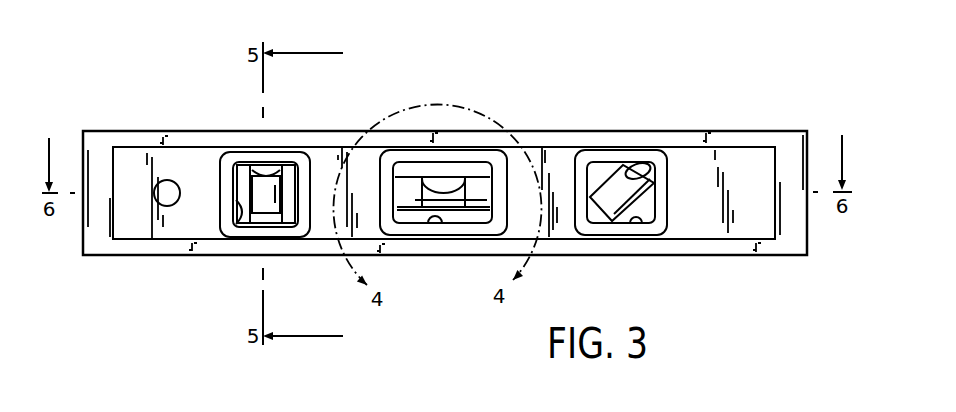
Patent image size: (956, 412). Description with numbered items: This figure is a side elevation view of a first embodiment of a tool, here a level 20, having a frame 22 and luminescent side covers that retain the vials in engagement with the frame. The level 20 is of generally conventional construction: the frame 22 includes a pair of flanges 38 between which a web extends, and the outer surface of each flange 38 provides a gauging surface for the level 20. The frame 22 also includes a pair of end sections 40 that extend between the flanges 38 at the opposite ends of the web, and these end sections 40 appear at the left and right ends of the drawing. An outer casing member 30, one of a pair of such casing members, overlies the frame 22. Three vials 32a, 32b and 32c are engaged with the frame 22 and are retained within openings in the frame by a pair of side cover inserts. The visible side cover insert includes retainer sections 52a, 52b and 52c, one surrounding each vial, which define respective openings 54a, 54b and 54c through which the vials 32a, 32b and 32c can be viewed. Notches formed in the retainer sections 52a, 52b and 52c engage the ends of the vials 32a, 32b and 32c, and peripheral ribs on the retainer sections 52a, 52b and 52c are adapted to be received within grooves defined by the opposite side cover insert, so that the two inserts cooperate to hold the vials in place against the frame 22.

The level 20 is at (719, 48).
The frame 22 is at (756, 124).
The outer casing member 30 is at (753, 218).
The flange 38 is at (559, 130).
The end section 40 is at (92, 170).
The vial 32a is at (290, 185).
The vial 32b is at (477, 218).
The vial 32c is at (603, 172).
The retainer section 52a is at (278, 233).
The retainer section 52b is at (393, 228).
The retainer section 52c is at (613, 231).
The opening 54a is at (243, 222).
The opening 54b is at (442, 224).
The opening 54c is at (638, 222).